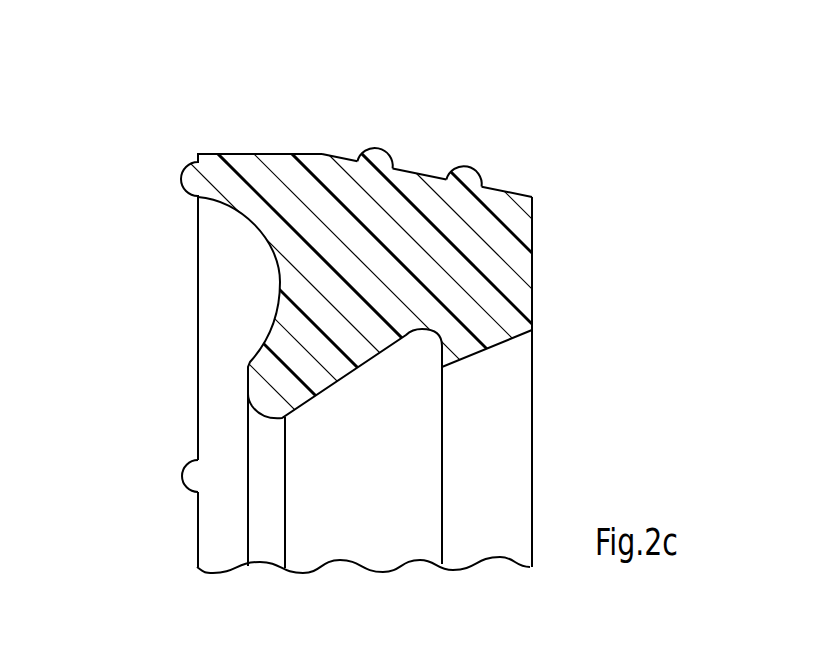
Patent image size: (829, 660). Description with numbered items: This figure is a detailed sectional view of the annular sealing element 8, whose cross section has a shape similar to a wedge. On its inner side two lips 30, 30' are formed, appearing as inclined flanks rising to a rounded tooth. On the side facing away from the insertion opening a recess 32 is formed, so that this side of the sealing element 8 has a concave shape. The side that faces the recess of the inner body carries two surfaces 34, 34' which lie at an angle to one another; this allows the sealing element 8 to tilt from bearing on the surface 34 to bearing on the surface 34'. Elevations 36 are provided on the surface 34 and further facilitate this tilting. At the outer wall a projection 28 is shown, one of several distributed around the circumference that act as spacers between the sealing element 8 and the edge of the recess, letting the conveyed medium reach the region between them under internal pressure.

The sealing element 8 is at (528, 80).
The surface 34' is at (251, 139).
The surface 34 is at (427, 162).
The elevations 36 is at (455, 165).
The recess 32 is at (242, 292).
The projections 28 is at (187, 477).
The lip 30' is at (345, 392).
The lip 30 is at (487, 381).